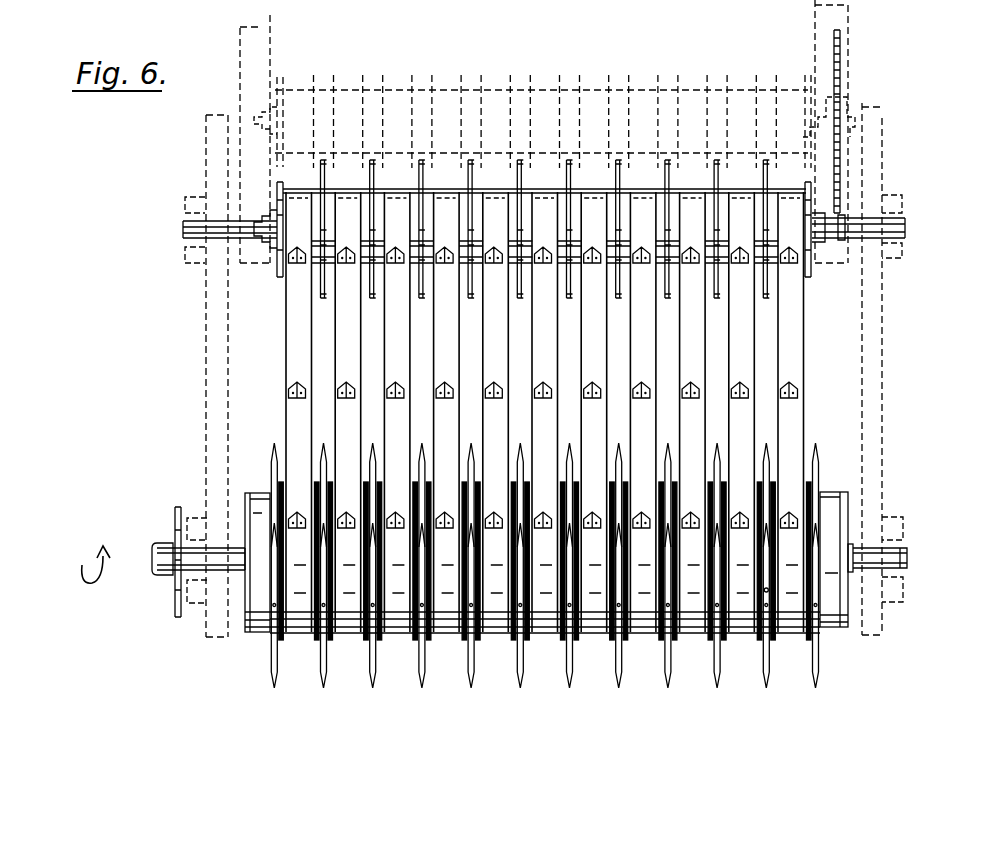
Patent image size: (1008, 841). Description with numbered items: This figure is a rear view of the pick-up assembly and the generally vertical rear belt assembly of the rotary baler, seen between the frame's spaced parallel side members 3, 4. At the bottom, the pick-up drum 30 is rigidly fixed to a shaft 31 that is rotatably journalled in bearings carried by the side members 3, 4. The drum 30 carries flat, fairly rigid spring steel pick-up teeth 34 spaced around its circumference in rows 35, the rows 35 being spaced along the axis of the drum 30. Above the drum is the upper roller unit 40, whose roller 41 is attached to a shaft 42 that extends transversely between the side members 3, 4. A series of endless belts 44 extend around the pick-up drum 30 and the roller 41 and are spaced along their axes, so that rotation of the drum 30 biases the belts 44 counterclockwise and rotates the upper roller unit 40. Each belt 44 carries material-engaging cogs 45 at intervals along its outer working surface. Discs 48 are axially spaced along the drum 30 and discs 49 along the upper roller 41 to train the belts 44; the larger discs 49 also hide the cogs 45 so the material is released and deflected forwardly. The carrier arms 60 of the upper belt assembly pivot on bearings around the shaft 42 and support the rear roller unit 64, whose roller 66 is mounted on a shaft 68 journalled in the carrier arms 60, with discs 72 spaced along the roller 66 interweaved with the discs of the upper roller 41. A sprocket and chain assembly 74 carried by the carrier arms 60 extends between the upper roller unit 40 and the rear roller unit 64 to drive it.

The side member 3 is at (210, 370).
The side member 4 is at (873, 354).
The pick-up drum 30 is at (832, 499).
The shaft 31 is at (888, 552).
The pick-up teeth 34 is at (378, 668).
The rows 35 is at (765, 587).
The upper roller unit 40 is at (294, 278).
The roller 41 is at (318, 192).
The shaft 42 is at (195, 229).
The endless belts 44 is at (285, 342).
The cogs 45 is at (291, 388).
The discs 48 is at (315, 482).
The discs 49 is at (373, 187).
The carrier arms 60 is at (240, 44).
The rear roller unit 64 is at (494, 88).
The roller 66 is at (601, 70).
The shaft 68 is at (858, 119).
The discs 72 is at (512, 74).
The sprocket and chain assembly 74 is at (843, 96).